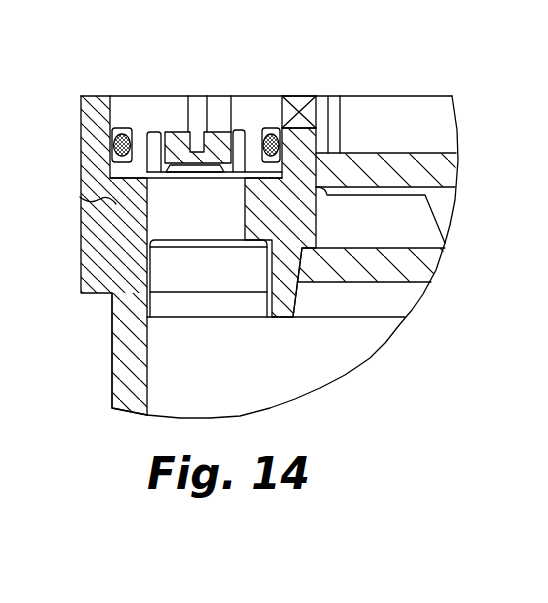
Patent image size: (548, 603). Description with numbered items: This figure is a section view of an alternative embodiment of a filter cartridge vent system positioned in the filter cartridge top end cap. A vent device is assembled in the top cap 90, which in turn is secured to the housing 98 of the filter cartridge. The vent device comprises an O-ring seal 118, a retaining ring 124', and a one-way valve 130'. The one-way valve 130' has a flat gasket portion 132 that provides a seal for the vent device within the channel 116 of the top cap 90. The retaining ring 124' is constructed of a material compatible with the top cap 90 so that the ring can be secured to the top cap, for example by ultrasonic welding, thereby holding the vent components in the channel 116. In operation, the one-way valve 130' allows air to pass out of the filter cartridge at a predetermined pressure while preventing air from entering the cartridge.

The top cap 90 is at (108, 252).
The housing 98 is at (128, 366).
The channel 116 is at (178, 190).
The O-ring seal 118 is at (307, 97).
The retaining ring 124' is at (140, 106).
The one-way valve 130' is at (231, 104).
The flat gasket portion 132 is at (80, 199).